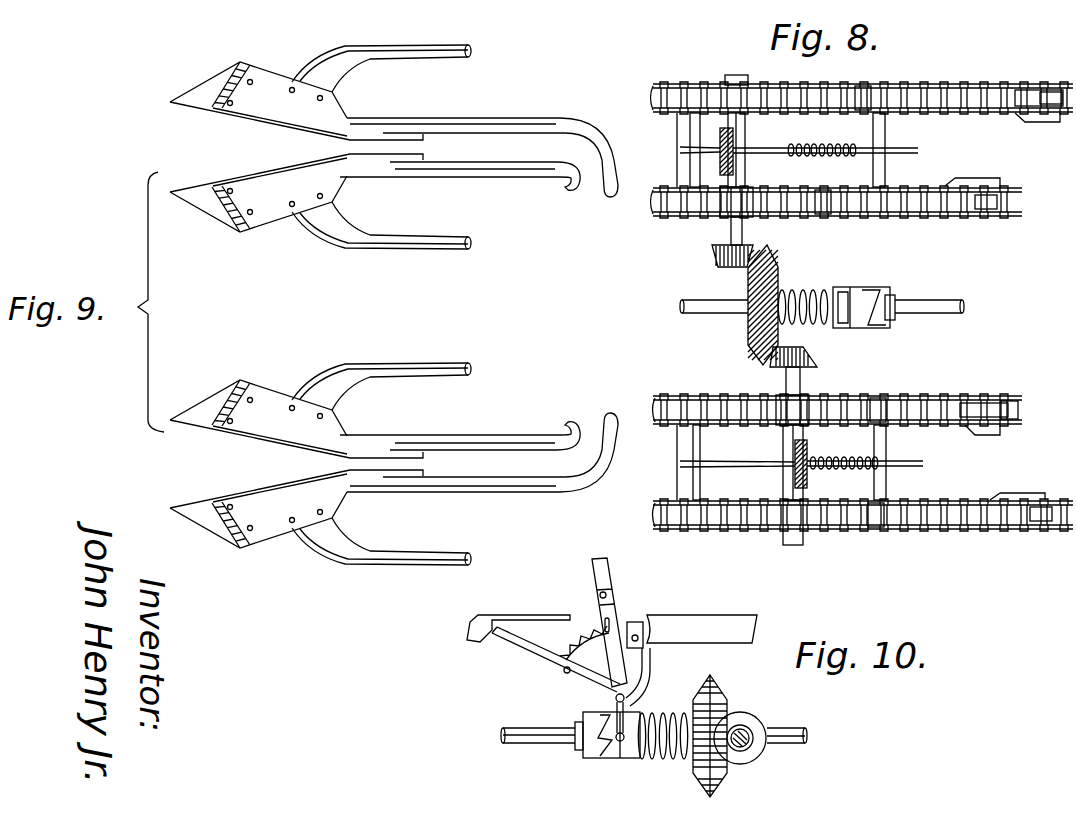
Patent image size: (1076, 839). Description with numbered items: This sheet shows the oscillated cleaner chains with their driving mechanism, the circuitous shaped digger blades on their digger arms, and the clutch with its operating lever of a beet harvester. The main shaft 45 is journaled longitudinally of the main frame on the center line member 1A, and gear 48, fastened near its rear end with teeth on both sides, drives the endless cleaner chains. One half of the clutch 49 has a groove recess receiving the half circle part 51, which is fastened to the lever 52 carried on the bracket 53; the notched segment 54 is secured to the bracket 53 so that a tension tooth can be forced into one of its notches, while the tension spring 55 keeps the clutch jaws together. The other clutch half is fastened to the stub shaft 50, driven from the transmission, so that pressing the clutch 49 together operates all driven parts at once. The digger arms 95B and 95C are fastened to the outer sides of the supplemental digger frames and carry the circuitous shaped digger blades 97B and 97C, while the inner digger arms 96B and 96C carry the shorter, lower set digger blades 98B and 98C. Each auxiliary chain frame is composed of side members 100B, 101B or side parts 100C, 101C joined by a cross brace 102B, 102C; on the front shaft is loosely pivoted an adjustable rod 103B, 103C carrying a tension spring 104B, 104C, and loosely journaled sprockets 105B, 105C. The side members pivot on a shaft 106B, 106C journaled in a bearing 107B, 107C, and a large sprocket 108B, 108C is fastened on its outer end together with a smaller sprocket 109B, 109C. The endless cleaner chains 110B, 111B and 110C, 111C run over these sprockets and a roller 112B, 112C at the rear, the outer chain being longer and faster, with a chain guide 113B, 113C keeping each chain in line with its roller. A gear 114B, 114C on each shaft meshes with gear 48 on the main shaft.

In FIG. 9, the digger arm 95B is at (398, 47).
In FIG. 9, the digger arm 96B is at (403, 241).
In FIG. 9, the circuitous shaped digger blade 97B is at (488, 121).
In FIG. 9, the circuitous shaped digger blade 98B is at (503, 165).
In FIG. 9, the digger arm 95C is at (435, 550).
In FIG. 9, the digger arm 96C is at (387, 363).
In FIG. 9, the circuitous shaped digger blade 97C is at (512, 481).
In FIG. 9, the circuitous shaped digger blade 98C is at (467, 437).
In FIG. 8, the side member 100B is at (942, 85).
In FIG. 8, the side member 101B is at (934, 217).
In FIG. 8, the cross brace 102B is at (886, 128).
In FIG. 8, the adjustable rod 103B is at (680, 168).
In FIG. 8, the tension spring 104B is at (835, 146).
In FIG. 8, the loosely journaled sprocket 105B is at (655, 96).
In FIG. 8, the shaft 106B is at (748, 242).
In FIG. 8, the bearing 107B is at (720, 140).
In FIG. 8, the large sprocket 108B is at (712, 83).
In FIG. 8, the lower sprocket B 109B is at (748, 198).
In FIG. 8, the endless cleaner chain 110B is at (861, 88).
In FIG. 8, the endless cleaner chain 111B is at (826, 217).
In FIG. 8, the roller 112B is at (1043, 94).
In FIG. 8, the chain guide 113B is at (1043, 118).
In FIG. 8, the gear 114B is at (718, 255).
In FIG. 8, the side part 100C is at (963, 530).
In FIG. 8, the side part 101C is at (957, 395).
In FIG. 8, the cross brace 102C is at (887, 441).
In FIG. 8, the adjustable rod 103C is at (683, 480).
In FIG. 8, the tension spring 104C is at (836, 460).
In FIG. 8, the loosely journaled sprocket 105C is at (667, 396).
In FIG. 8, the shaft 106C is at (808, 372).
In FIG. 8, the bearing 107C is at (795, 445).
In FIG. 8, the large sprocket 108C is at (805, 512).
In FIG. 8, the upper sprocket C 109C is at (779, 397).
In FIG. 8, the endless cleaner chain 110C is at (881, 530).
In FIG. 8, the endless cleaner chain 111C is at (881, 396).
In FIG. 8, the roller 112C is at (1020, 408).
In FIG. 8, the chain guide 113C is at (991, 430).
In FIG. 8, the gear 114C is at (803, 330).
In FIG. 8, the main shaft 45 is at (682, 306).
In FIG. 10, the main shaft 45 is at (778, 729).
In FIG. 8, the gear 48 is at (748, 284).
In FIG. 10, the gear 48 is at (700, 781).
In FIG. 8, the clutch 49 is at (866, 298).
In FIG. 10, the clutch 49 is at (589, 759).
In FIG. 8, the stub shaft 50 is at (926, 303).
In FIG. 10, the stub shaft 50 is at (525, 729).
In FIG. 10, the half circle part 51 is at (610, 702).
In FIG. 10, the lever 52 is at (597, 590).
In FIG. 10, the bracket 53 is at (540, 665).
In FIG. 10, the notched segment 54 is at (575, 643).
In FIG. 8, the tension spring 55 is at (805, 296).
In FIG. 10, the tension spring 55 is at (651, 714).
In FIG. 10, the center line member 1A is at (494, 596).